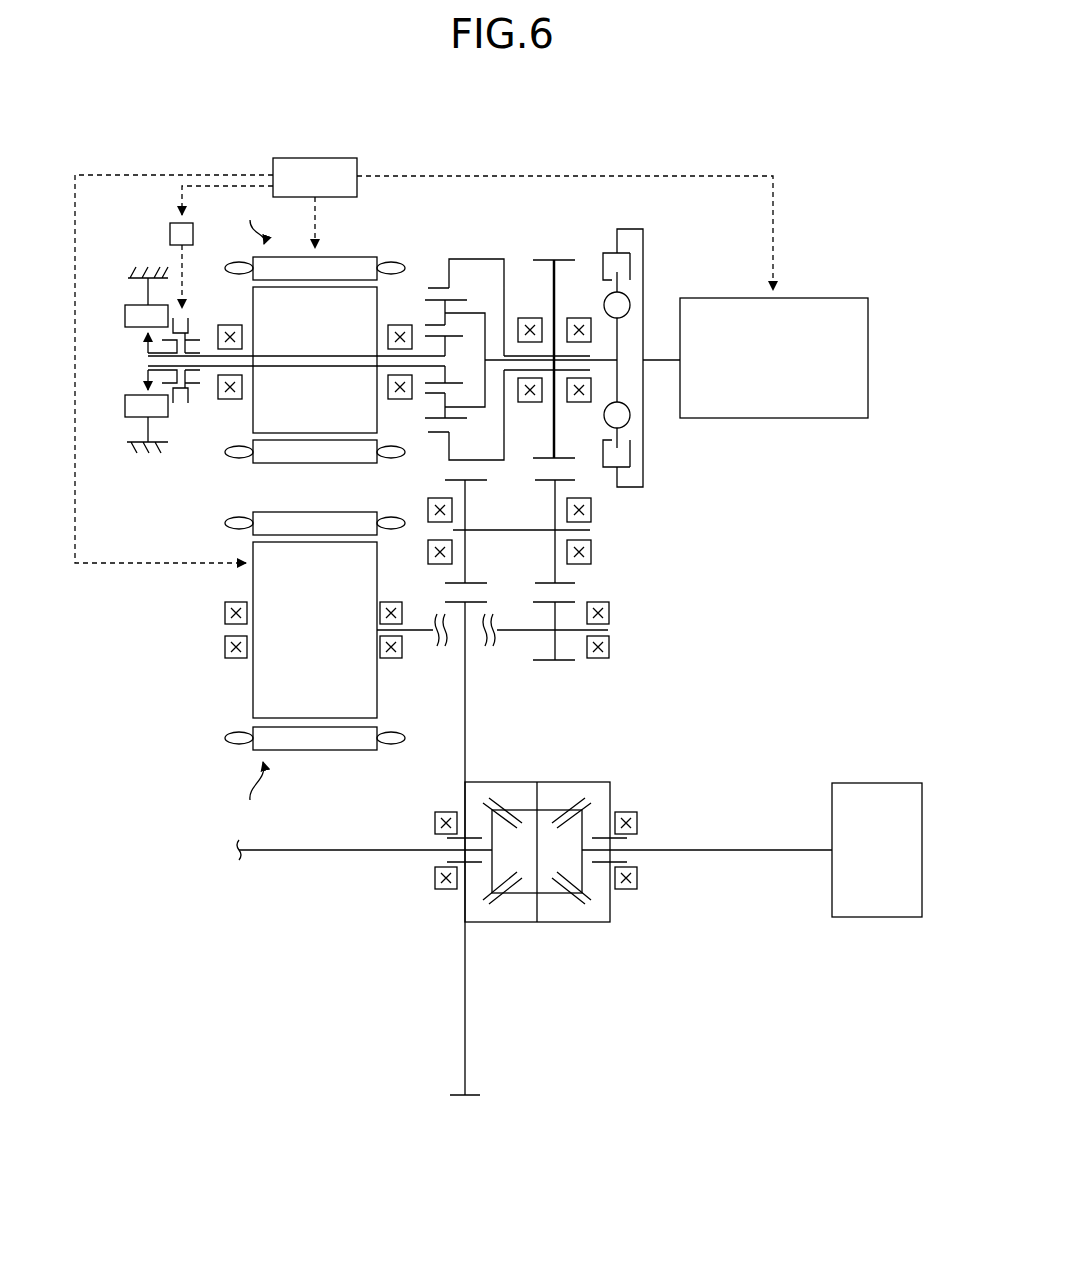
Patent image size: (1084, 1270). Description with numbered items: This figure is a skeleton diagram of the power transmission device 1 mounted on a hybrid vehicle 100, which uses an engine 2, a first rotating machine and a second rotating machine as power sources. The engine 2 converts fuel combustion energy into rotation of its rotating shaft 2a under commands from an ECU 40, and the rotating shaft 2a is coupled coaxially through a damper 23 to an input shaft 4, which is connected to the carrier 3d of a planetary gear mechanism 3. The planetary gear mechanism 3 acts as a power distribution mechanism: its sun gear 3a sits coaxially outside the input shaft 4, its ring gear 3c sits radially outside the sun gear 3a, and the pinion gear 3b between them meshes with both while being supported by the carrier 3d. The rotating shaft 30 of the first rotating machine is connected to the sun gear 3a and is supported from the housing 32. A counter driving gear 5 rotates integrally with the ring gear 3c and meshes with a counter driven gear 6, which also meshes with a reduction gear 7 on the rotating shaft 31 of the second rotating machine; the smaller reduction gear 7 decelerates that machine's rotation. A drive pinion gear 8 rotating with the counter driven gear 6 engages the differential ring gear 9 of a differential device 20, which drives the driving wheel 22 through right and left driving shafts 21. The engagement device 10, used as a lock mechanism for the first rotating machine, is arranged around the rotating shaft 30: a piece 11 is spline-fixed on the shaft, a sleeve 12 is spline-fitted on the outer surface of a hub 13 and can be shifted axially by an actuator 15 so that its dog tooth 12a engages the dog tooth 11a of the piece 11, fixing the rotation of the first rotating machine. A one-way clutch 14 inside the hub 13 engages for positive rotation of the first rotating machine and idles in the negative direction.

The hybrid vehicle 100 is at (806, 86).
The power transmission device 1 is at (720, 160).
The engine 2 is at (820, 282).
The rotating shaft 2a is at (660, 361).
The planetary gear mechanism 3 is at (438, 238).
The sun gear 3a is at (453, 340).
The pinion gear 3b is at (430, 325).
The ring gear 3c is at (430, 288).
The carrier 3d is at (477, 312).
The input shaft 4 is at (603, 358).
The counter driving gear 5 is at (562, 259).
The counter driven gear 6 is at (543, 481).
The reduction gear 7 is at (573, 601).
The drive pinion gear 8 is at (473, 479).
The differential ring gear 9 is at (475, 601).
The engagement device 10 is at (133, 208).
The piece 11 is at (213, 358).
The dog tooth 11a is at (190, 336).
The sleeve 12 is at (135, 359).
The dog tooth 12a is at (179, 318).
The hub 13 is at (168, 347).
The one-way clutch 14 is at (125, 313).
The actuator 15 is at (170, 233).
The differential device 20 is at (606, 766).
The driving shaft 21 is at (343, 852).
The driving wheel 22 is at (876, 783).
The damper 23 is at (637, 224).
The rotating shaft 30 is at (412, 325).
The rotating shaft 31 is at (418, 632).
The housing 32 is at (137, 278).
The electronic control unit 40 is at (312, 158).